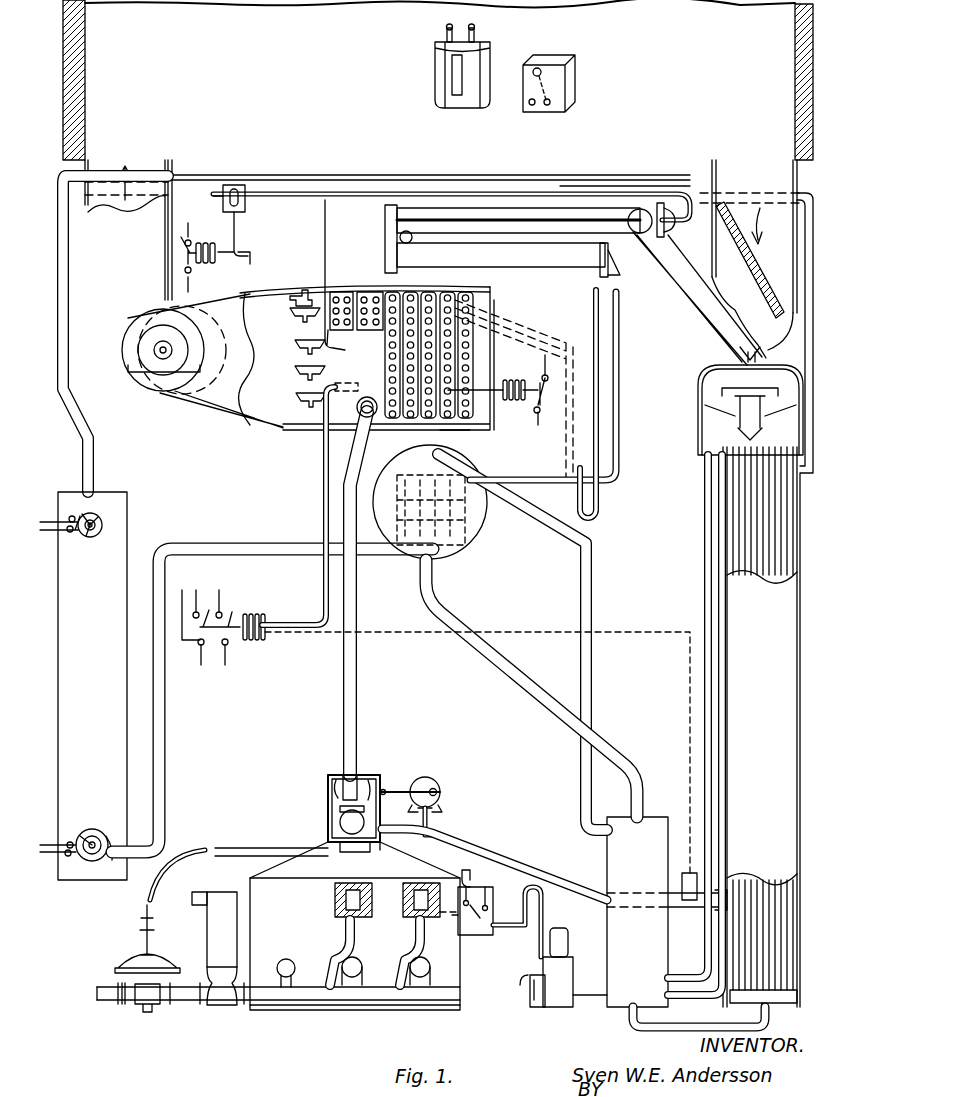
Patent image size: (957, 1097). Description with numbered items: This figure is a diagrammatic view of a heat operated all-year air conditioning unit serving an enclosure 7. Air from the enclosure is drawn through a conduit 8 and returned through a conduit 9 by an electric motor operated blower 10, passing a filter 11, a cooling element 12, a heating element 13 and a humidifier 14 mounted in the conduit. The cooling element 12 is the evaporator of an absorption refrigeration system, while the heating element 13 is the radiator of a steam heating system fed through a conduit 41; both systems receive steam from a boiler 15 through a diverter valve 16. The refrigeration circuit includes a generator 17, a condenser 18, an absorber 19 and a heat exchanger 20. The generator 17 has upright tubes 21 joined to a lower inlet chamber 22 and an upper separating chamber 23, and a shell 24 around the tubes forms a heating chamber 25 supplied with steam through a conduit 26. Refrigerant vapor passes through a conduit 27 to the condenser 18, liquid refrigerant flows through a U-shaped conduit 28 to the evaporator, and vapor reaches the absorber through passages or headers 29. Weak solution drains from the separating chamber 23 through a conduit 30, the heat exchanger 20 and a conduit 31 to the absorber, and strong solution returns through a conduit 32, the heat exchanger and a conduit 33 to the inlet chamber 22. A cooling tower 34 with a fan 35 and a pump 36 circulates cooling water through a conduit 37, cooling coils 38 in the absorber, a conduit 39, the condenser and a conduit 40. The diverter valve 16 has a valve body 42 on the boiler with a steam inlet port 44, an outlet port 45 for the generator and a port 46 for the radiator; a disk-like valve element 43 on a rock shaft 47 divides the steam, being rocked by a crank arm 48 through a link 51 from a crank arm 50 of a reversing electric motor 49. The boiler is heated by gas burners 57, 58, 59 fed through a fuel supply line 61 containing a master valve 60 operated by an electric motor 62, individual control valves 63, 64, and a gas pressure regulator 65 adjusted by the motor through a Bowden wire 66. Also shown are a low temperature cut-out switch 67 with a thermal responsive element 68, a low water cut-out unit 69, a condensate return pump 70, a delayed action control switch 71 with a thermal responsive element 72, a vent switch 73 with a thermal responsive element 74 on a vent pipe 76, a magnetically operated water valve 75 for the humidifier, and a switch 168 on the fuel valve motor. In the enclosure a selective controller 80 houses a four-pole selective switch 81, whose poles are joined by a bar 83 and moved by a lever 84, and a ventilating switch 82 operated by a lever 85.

The enclosure 7 is at (438, 179).
The conduit 8 is at (703, 395).
The conduit 9 is at (152, 220).
The blower 10 is at (175, 410).
The filter 11 is at (752, 270).
The cooling element 12 is at (489, 327).
The heating element 13 is at (352, 283).
The humidifier 14 is at (291, 361).
The boiler 15 is at (248, 870).
The diverter valve 16 is at (319, 800).
The generator 17 is at (792, 787).
The condenser 18 is at (530, 240).
The absorber 19 is at (455, 538).
The heat exchanger 20 is at (607, 855).
The upright tubes 21 is at (775, 921).
The inlet chamber 22 is at (790, 999).
The separating chamber 23 is at (698, 431).
The shell 24 is at (796, 881).
The heating chamber 25 is at (785, 952).
The conduit 26 is at (505, 856).
The conduit 27 is at (702, 320).
The U-shaped conduit 28 is at (600, 503).
The passages or headers 29 is at (458, 433).
The conduit 30 is at (704, 746).
The conduit 31 is at (592, 690).
The conduit 32 is at (517, 680).
The conduit 33 is at (640, 1027).
The cooling tower 34 is at (92, 686).
The fan 35 is at (100, 520).
The pump 36 is at (95, 830).
The conduit 37 is at (165, 752).
The cooling coils 38 is at (462, 520).
The conduit 39 is at (525, 481).
The conduit 40 is at (90, 453).
The conduit 41 is at (357, 680).
The valve body 42 is at (328, 784).
The valve element 43 is at (340, 812).
The steam inlet port 44 is at (340, 826).
The outlet port 45 is at (372, 848).
The port 46 is at (335, 778).
The rock shaft 47 is at (362, 772).
The crank arm 48 is at (376, 790).
The reversing electric motor 49 is at (428, 778).
The crank arm 50 is at (438, 790).
The link 51 is at (440, 776).
The gas burner 57 is at (278, 962).
The gas burner 58 is at (352, 982).
The gas burner 59 is at (420, 980).
The master valve 60 is at (222, 1005).
The fuel supply line 61 is at (108, 1000).
The electric motor 62 is at (215, 938).
The control valve 63 is at (335, 906).
The control valve 64 is at (405, 906).
The gas pressure regulator 65 is at (140, 1010).
The Bowden wire 66 is at (218, 852).
The low temperature cut-out switch 67 is at (536, 404).
The thermal responsive element 68 is at (493, 377).
The low water cut-out unit 69 is at (490, 900).
The condensate return pump 70 is at (572, 966).
The delayed action control switch 71 is at (237, 597).
The thermal responsive element 72 is at (255, 612).
The vent switch 73 is at (186, 250).
The thermal responsive element 74 is at (222, 246).
The water valve 75 is at (303, 288).
The vent pipe 76 is at (312, 205).
The selective controller 80 is at (436, 78).
The four-pole double-throw selective switch 81 is at (562, 86).
The ventilating switch 82 is at (576, 101).
The bar 83 is at (527, 104).
The lever 84 is at (444, 30).
The lever 85 is at (478, 30).
The switch 168 is at (192, 896).